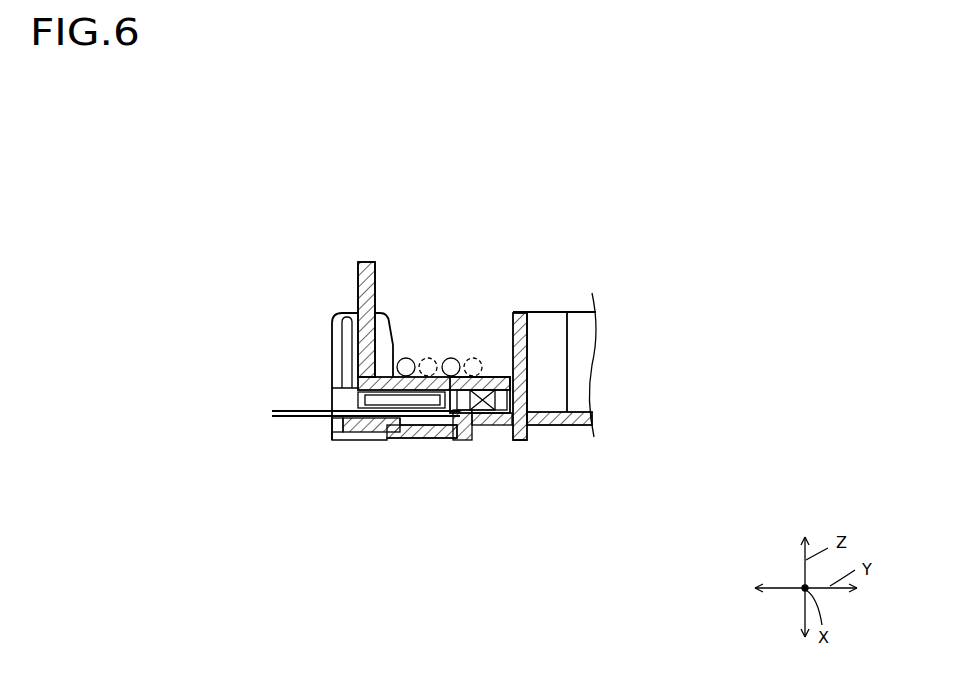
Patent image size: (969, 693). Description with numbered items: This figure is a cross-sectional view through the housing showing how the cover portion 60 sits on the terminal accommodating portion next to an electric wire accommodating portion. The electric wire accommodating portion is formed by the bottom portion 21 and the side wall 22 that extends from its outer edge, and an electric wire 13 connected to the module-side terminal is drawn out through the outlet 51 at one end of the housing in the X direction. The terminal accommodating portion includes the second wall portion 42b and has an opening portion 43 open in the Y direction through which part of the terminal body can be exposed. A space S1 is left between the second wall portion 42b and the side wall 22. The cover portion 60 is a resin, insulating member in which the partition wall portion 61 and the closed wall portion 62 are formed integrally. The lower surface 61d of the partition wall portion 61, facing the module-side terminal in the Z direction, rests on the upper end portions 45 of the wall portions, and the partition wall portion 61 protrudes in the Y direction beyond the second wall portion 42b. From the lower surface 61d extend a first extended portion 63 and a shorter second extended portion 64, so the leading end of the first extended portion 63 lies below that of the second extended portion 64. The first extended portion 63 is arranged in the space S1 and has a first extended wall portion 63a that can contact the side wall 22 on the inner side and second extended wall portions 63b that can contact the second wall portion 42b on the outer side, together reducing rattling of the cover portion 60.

The electric wire 13 is at (293, 418).
The bottom portion 21 is at (578, 412).
The side wall 22 is at (522, 333).
The second wall portion 42b is at (473, 428).
The opening portion 43 is at (332, 343).
The upper end portion 45 is at (447, 362).
The outlet 51 is at (530, 338).
The cover portion 60 is at (371, 262).
The partition wall portion 61 is at (497, 377).
The lower surface 61d is at (358, 398).
The closed wall portion 62 is at (358, 272).
The first extended portion 63 is at (525, 396).
The first extended wall portion 63a is at (503, 420).
The second extended wall portion 63b is at (470, 377).
The second extended portion 64 is at (422, 405).
The space S1 is at (488, 411).